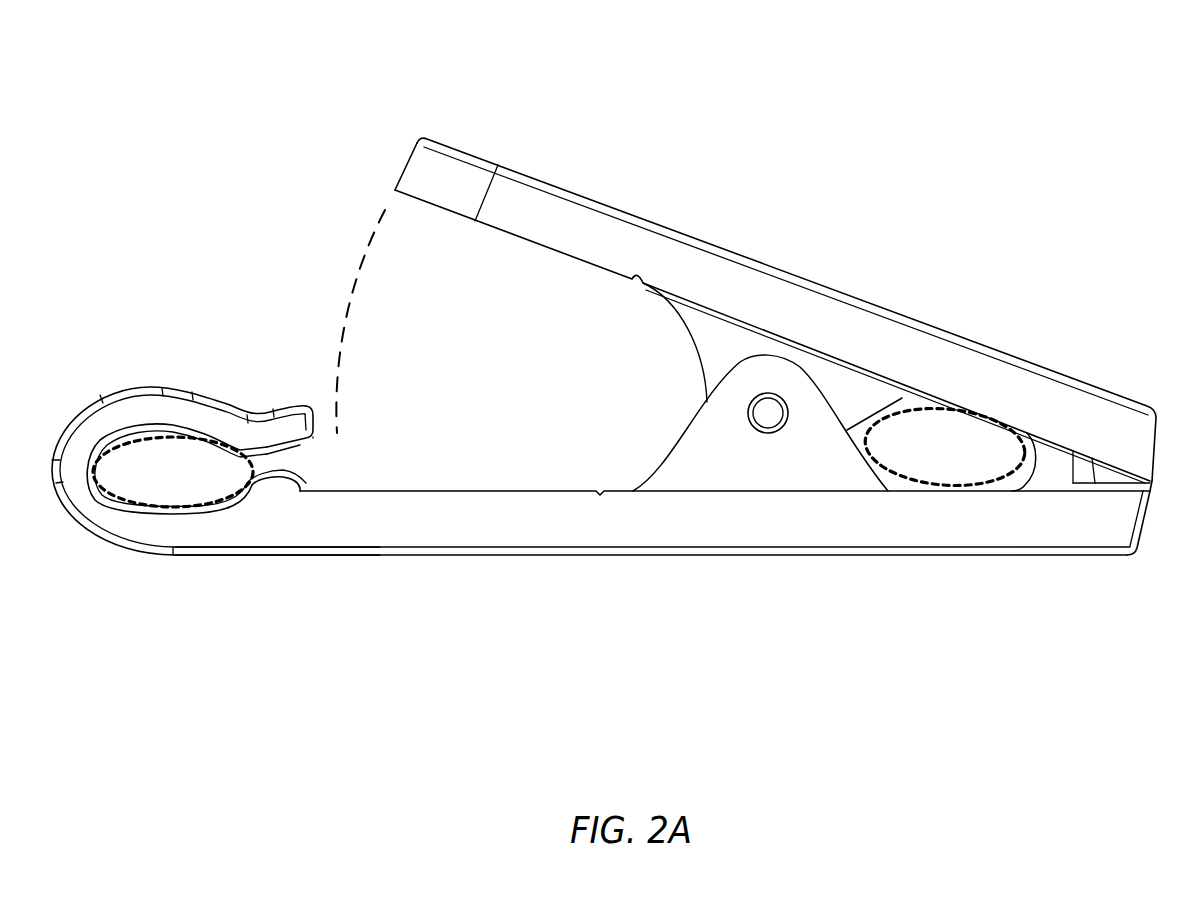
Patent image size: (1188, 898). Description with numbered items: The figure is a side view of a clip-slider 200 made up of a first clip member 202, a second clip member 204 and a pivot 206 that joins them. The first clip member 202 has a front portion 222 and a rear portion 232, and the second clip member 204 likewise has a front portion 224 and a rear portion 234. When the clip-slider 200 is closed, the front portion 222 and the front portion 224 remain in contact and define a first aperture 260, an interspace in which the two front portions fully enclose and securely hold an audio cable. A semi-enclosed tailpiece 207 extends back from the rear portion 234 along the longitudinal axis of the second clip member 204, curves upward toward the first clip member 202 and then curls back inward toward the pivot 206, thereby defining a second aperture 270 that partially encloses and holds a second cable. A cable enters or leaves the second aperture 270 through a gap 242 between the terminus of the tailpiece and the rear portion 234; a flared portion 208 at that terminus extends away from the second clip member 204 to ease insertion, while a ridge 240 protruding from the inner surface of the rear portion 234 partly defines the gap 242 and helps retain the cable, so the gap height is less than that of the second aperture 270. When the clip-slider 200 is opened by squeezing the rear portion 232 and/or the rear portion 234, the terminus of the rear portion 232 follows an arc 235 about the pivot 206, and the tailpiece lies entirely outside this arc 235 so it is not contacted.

The clip-slider 200 is at (195, 65).
The first clip member 202 is at (804, 318).
The second clip member 204 is at (539, 527).
The pivot 206 is at (767, 418).
The semi-enclosed tailpiece 207 is at (95, 318).
The flared portion 208 is at (282, 380).
The front portion 222 is at (1008, 301).
The front portion 224 is at (930, 589).
The rear portion 232 is at (521, 97).
The rear portion 234 is at (392, 604).
The arc 235 is at (360, 267).
The ridge 240 is at (297, 481).
The gap 242 is at (329, 456).
The first aperture 260 is at (937, 410).
The second aperture 270 is at (153, 438).